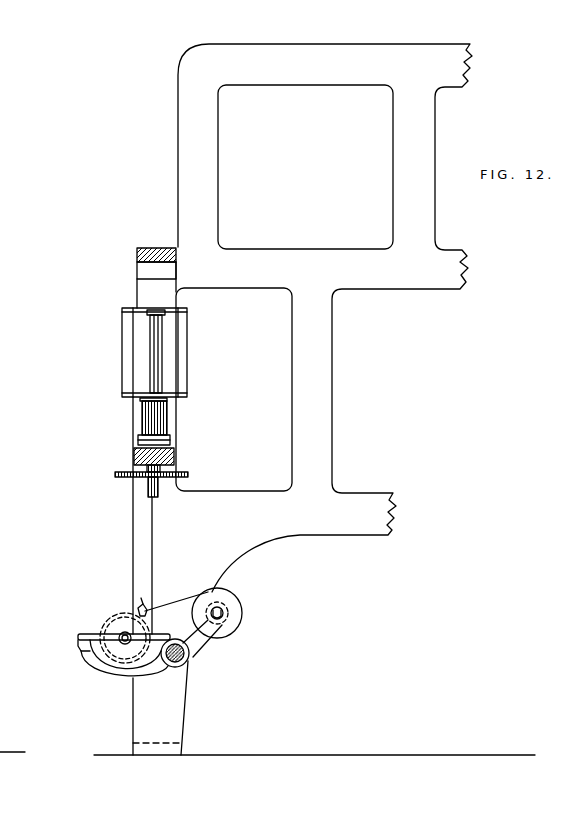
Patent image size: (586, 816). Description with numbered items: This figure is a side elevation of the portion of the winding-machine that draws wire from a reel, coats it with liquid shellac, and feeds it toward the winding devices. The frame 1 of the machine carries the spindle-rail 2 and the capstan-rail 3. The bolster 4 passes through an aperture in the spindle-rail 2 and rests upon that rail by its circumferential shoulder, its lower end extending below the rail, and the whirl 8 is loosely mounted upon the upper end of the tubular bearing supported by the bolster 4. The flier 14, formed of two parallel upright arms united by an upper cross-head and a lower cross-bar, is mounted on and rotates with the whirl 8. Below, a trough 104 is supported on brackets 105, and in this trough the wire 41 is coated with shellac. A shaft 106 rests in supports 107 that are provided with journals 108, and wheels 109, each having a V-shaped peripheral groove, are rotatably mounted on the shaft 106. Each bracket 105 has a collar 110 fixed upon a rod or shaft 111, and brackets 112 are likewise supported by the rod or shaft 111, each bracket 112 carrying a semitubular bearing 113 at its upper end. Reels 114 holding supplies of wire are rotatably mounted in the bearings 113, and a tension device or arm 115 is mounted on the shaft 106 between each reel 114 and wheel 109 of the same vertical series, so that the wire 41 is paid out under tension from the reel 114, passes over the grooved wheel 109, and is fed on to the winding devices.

The frame 1 is at (130, 553).
The spindle-rail 2 is at (176, 460).
The capstan-rail 3 is at (146, 263).
The bolster 4 is at (136, 446).
The whirl 8 is at (170, 431).
The flier 14 is at (152, 352).
The wire 41 is at (155, 560).
The trough 104 is at (108, 668).
The brackets 105 is at (82, 651).
The shaft 106 is at (125, 639).
The supports 107 is at (78, 636).
The journals 108 is at (112, 623).
The wheels 109 is at (136, 609).
The collar 110 is at (185, 662).
The rod or shaft 111 is at (172, 667).
The brackets 112 is at (199, 652).
The semitubular bearing 113 is at (228, 613).
The reels 114 is at (226, 611).
The tension device or arm 115 is at (152, 608).